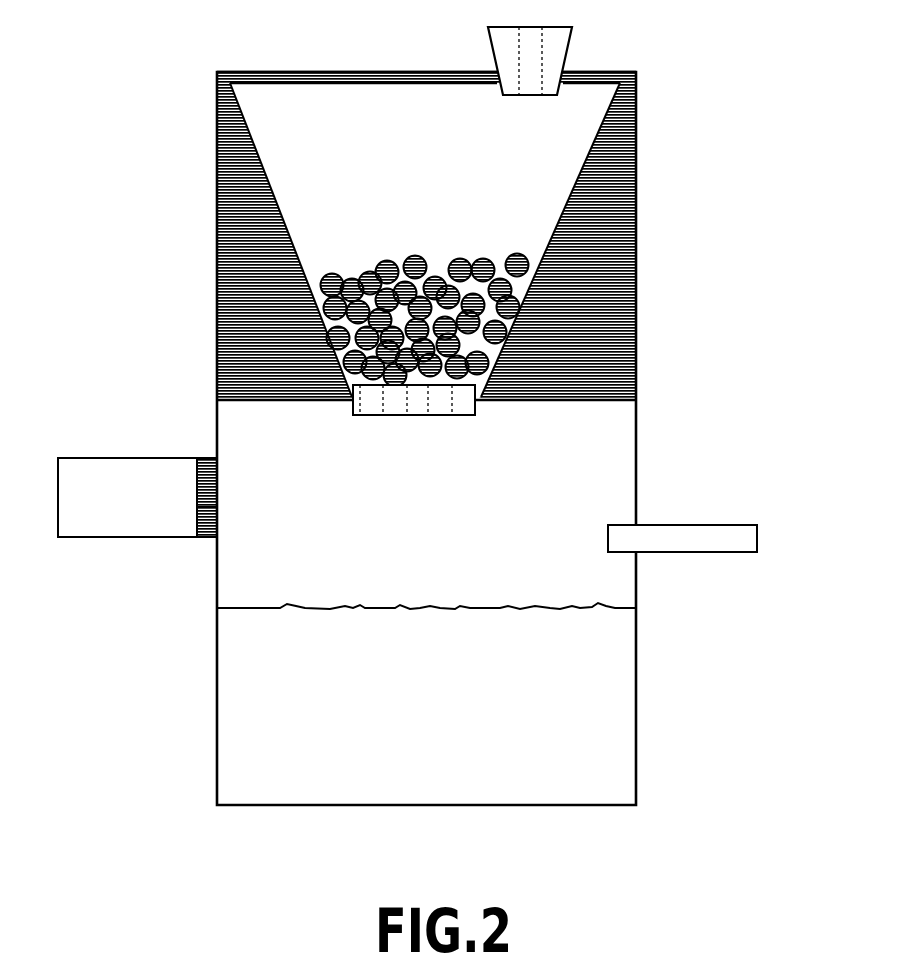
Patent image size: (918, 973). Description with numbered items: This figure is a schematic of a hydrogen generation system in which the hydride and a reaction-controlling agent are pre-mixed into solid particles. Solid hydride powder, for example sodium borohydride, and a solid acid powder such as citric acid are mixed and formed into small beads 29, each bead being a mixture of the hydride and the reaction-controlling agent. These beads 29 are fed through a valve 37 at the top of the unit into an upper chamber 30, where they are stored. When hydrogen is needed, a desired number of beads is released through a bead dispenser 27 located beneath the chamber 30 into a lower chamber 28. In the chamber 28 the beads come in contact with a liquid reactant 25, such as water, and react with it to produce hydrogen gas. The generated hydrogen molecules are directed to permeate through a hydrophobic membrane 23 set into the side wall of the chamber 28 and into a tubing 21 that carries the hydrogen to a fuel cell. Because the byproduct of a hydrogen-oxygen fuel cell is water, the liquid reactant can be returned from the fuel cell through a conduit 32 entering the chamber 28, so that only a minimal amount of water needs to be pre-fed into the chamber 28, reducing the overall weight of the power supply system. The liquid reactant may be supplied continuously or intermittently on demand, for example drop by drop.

The tubing 21 is at (118, 477).
The hydrophobic membrane 23 is at (197, 507).
The liquid reactant 25 is at (570, 708).
The bead dispenser 27 is at (447, 400).
The chamber 28 is at (512, 500).
The beads 29 is at (480, 347).
The chamber 30 is at (500, 192).
The conduit 32 is at (687, 542).
The valve 37 is at (562, 42).